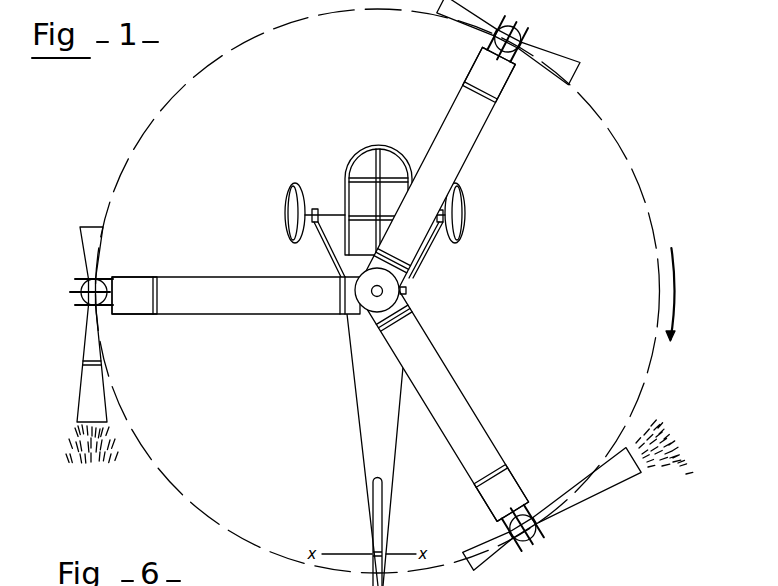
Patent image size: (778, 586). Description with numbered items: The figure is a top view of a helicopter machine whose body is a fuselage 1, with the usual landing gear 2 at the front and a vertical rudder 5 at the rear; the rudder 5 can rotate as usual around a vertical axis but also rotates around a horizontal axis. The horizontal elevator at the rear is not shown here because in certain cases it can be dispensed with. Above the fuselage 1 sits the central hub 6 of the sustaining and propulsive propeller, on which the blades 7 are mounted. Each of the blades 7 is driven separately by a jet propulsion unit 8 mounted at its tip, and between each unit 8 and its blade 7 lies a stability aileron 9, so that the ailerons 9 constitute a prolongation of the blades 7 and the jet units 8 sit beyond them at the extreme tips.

The fuselage 1 is at (367, 423).
The landing gear 2 is at (331, 214).
The vertical rudder 5 is at (372, 513).
The central hub 6 is at (389, 296).
The blades 7 is at (238, 308).
The jet propulsion units 8 is at (78, 285).
The stability ailerons 9 is at (131, 288).